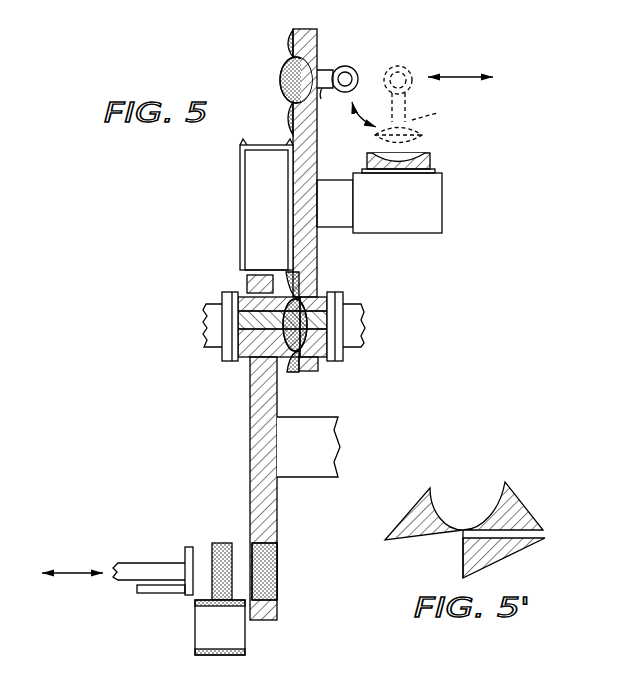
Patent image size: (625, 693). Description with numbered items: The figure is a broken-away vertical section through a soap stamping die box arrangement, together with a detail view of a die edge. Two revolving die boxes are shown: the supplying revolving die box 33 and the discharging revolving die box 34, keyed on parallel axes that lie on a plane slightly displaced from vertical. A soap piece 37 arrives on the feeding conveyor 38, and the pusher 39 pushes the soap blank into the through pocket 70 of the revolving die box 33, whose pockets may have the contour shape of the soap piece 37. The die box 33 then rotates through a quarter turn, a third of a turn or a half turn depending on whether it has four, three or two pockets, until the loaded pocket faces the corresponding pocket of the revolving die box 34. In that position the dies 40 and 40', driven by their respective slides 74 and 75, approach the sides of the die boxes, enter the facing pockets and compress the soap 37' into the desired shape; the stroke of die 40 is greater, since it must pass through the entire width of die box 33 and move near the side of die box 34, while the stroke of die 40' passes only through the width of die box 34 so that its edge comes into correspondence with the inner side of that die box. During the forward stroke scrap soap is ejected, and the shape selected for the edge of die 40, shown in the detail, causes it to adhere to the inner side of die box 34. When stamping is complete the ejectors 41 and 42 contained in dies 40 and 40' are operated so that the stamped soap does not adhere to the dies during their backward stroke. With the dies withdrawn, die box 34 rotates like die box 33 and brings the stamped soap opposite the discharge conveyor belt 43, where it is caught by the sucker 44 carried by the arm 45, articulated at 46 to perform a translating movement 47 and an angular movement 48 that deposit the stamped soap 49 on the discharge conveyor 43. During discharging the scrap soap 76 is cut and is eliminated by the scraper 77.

In FIG. 5, the revolving die box 34 is at (310, 36).
In FIG. 5', the revolving die box 34 is at (470, 547).
In FIG. 5, the revolving die box 33 is at (258, 468).
In FIG. 5, the scrap soap 76 is at (284, 46).
In FIG. 5, the sucker 44 is at (310, 70).
In FIG. 5, the articulation 46 is at (398, 67).
In FIG. 5, the arm 45 is at (330, 102).
In FIG. 5, the angular movement 48 is at (357, 113).
In FIG. 5, the translating movement 47 is at (462, 76).
In FIG. 5, the stamped soap 49 is at (436, 114).
In FIG. 5, the discharge conveyor belt 43 is at (430, 170).
In FIG. 5, the scraper 77 is at (262, 207).
In FIG. 5, the die 40 is at (255, 347).
In FIG. 5', the die 40 is at (419, 514).
In FIG. 5, the die 40' is at (328, 345).
In FIG. 5', the die 40' is at (506, 502).
In FIG. 5, the slide 74 is at (228, 302).
In FIG. 5, the slide 75 is at (340, 350).
In FIG. 5, the ejector 41 is at (253, 327).
In FIG. 5, the soap 37' is at (350, 325).
In FIG. 5, the ejector 42 is at (304, 312).
In FIG. 5, the through pocket 70 is at (279, 554).
In FIG. 5, the soap piece 37 is at (220, 557).
In FIG. 5, the feeding conveyor 38 is at (208, 649).
In FIG. 5, the pusher 39 is at (154, 590).